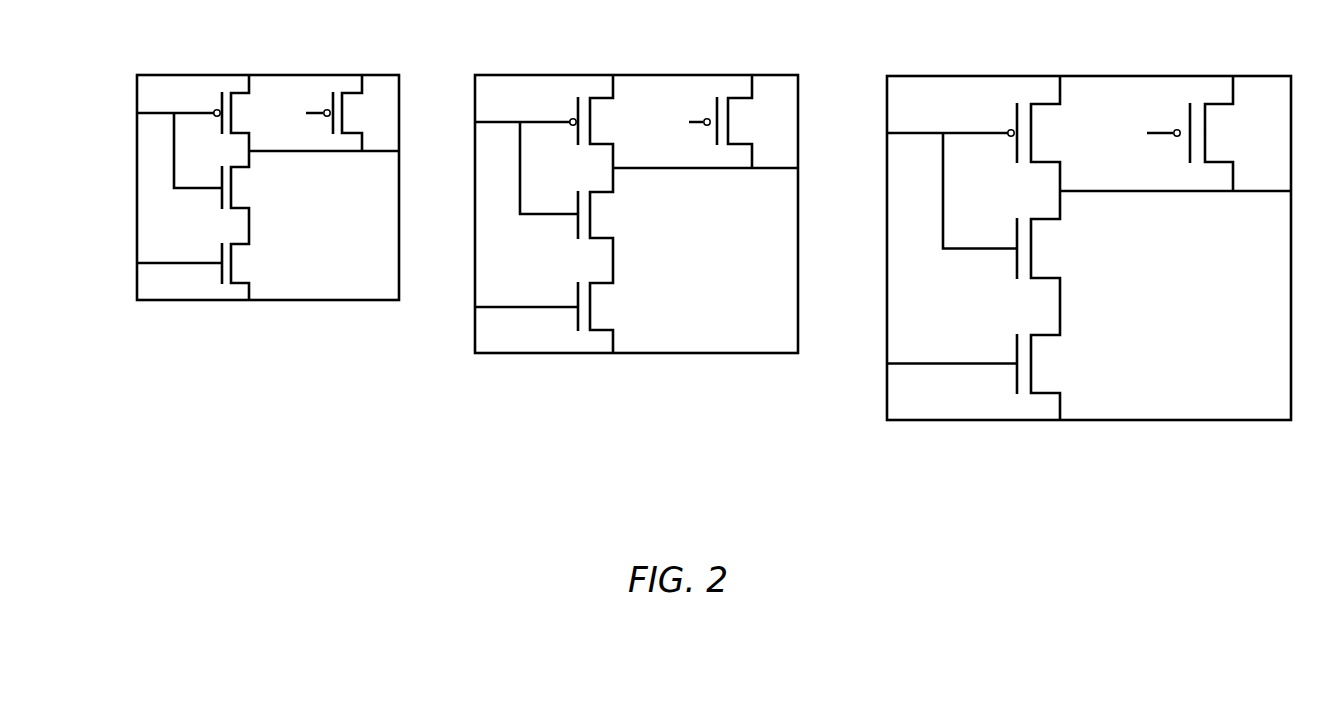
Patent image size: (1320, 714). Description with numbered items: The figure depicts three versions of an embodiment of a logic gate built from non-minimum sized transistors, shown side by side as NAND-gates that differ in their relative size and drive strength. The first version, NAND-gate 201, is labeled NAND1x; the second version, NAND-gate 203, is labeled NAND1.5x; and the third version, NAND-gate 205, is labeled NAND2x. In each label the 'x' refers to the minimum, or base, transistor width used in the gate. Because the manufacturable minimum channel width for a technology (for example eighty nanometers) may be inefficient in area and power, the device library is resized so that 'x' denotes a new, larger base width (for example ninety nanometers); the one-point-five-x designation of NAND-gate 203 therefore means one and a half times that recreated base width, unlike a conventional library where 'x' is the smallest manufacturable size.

The NAND-gate 201 is at (272, 75).
The NAND-gate 203 is at (585, 75).
The NAND-gate 205 is at (1137, 76).